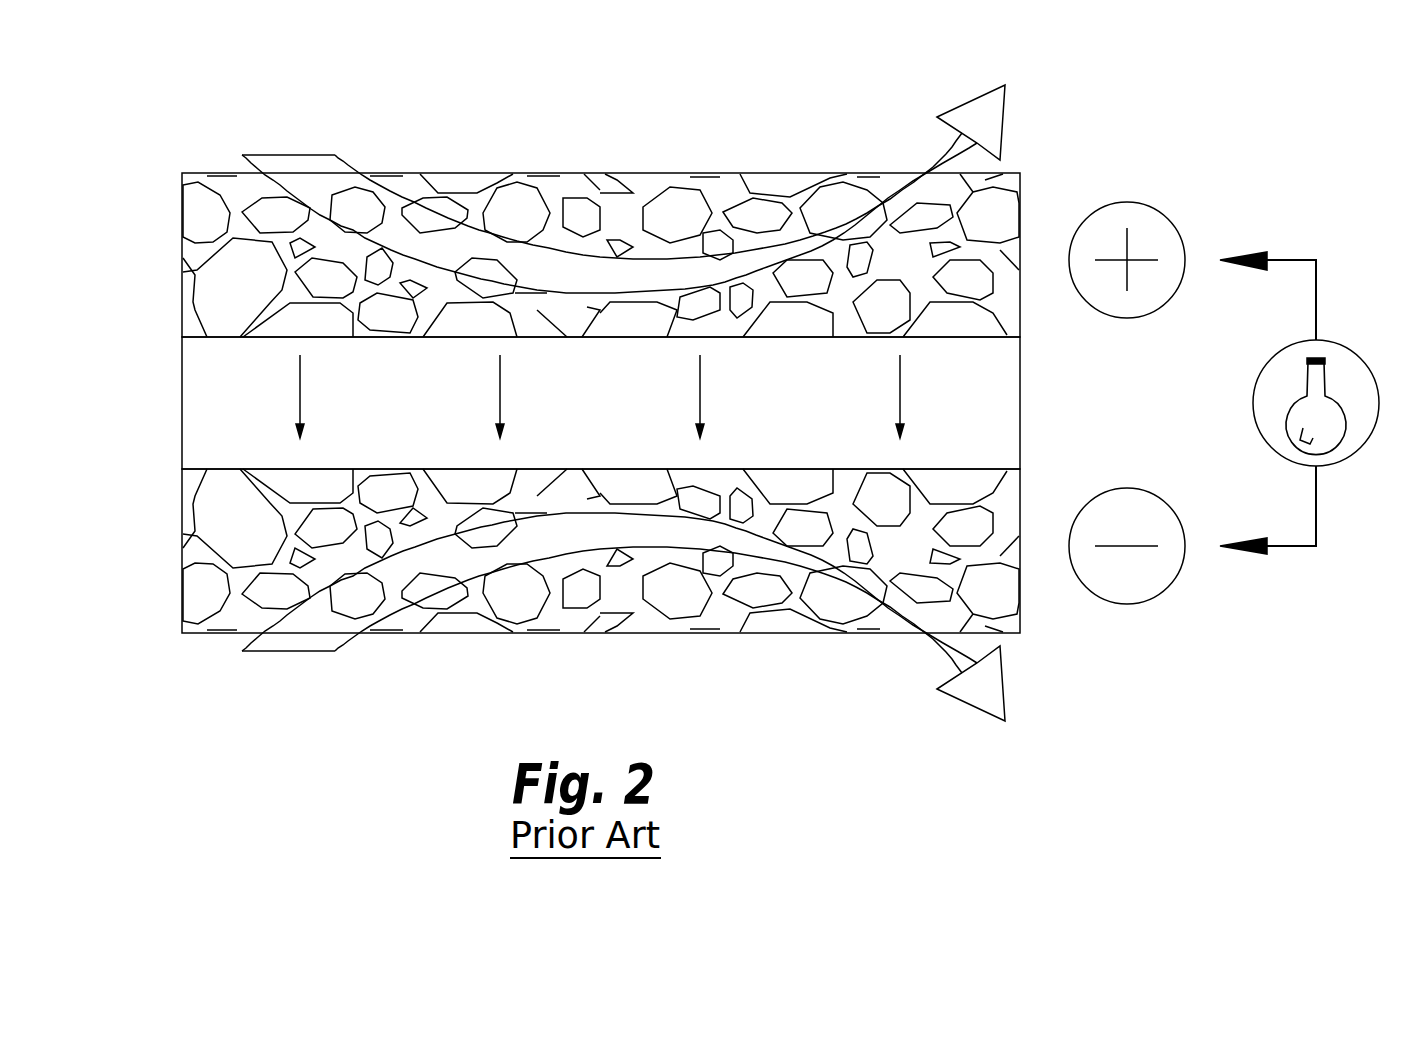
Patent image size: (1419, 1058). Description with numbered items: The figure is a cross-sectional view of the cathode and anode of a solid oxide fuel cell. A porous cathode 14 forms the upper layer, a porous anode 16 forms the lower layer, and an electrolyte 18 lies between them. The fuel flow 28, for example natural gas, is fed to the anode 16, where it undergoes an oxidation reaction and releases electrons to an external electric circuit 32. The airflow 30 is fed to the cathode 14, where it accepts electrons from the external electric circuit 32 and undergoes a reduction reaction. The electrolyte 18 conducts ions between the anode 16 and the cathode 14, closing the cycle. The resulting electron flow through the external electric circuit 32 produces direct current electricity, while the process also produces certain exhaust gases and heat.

The cathode 14 is at (182, 257).
The anode 16 is at (182, 555).
The electrolyte 18 is at (182, 398).
The fuel flow 28 is at (298, 652).
The airflow 30 is at (290, 160).
The external electric circuit 32 is at (1317, 328).